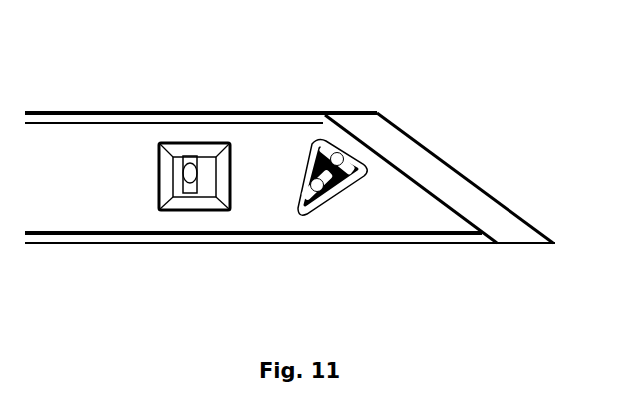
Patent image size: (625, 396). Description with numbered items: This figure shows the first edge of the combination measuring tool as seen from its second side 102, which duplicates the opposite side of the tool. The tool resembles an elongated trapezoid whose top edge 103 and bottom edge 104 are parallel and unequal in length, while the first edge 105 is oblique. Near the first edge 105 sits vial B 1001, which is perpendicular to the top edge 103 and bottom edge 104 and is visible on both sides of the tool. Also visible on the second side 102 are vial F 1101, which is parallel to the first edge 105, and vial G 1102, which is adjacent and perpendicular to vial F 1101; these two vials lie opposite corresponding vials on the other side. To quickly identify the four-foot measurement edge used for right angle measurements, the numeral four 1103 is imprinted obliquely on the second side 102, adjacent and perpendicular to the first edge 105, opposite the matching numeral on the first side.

The second side 102 is at (403, 276).
The top edge 103 is at (95, 102).
The bottom edge 104 is at (97, 248).
The first edge 105 is at (470, 172).
The vial B 1001 is at (187, 203).
The vial F 1101 is at (340, 157).
The vial G 1102 is at (303, 160).
The numeral "4" 1103 is at (430, 155).